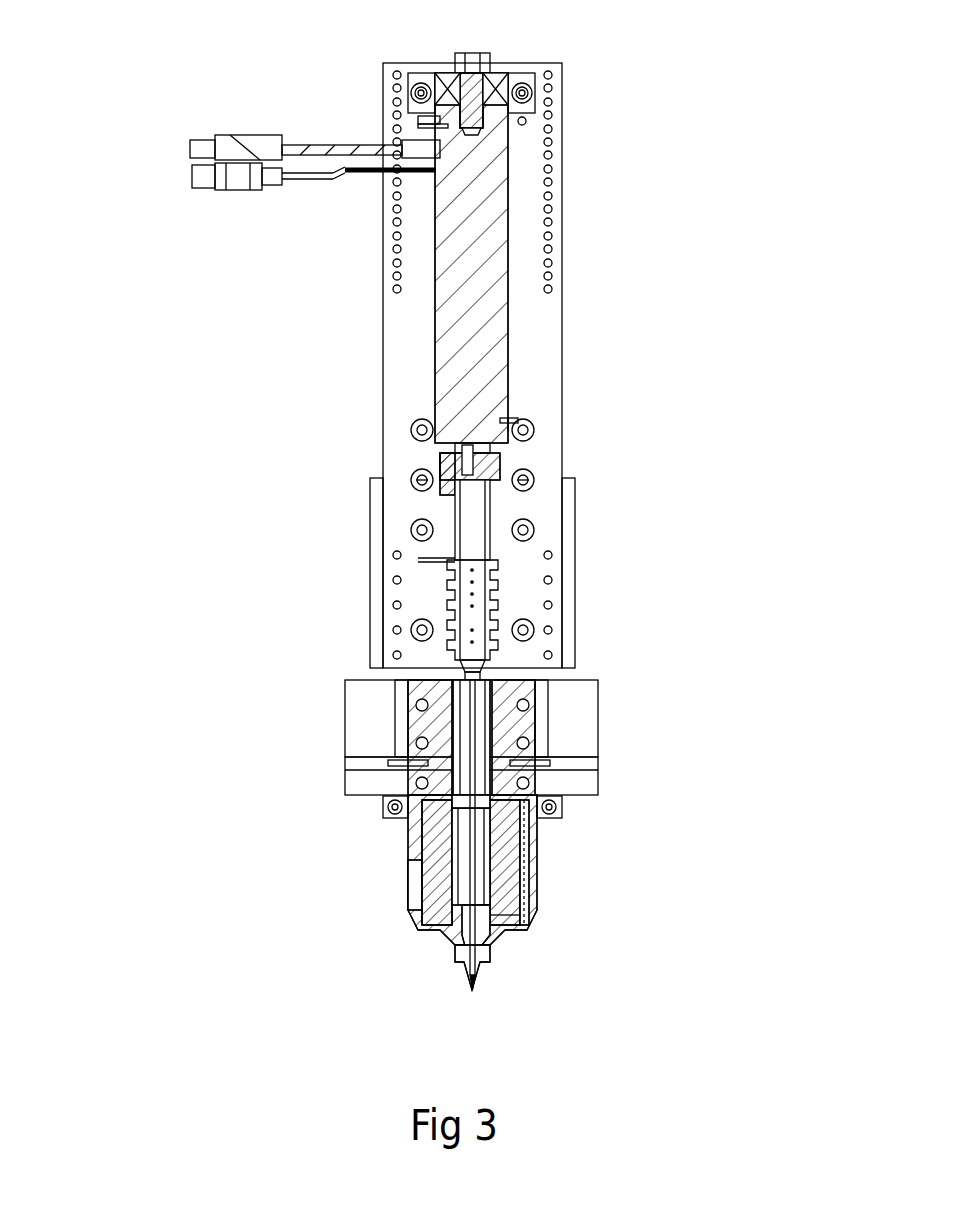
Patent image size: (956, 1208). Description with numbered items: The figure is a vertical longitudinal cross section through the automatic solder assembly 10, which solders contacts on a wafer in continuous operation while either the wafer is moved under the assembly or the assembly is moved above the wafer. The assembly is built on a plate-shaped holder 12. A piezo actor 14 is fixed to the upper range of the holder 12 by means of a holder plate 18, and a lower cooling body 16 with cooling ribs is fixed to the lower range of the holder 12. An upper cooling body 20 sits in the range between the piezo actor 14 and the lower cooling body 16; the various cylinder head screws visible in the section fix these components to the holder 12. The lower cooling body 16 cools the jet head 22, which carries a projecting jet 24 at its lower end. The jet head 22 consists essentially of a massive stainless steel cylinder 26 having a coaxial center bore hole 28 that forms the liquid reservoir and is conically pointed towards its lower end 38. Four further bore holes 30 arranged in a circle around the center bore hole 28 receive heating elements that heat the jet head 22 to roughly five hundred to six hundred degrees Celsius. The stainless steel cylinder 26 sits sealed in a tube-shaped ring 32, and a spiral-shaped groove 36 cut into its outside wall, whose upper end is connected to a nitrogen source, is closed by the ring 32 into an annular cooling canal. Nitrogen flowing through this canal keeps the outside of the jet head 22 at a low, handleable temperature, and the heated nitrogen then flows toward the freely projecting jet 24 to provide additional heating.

The solder assembly 10 is at (226, 465).
The holder 12 is at (528, 222).
The piezo actor 14 is at (474, 322).
The lower cooling body 16 is at (577, 700).
The holder plate 18 is at (497, 90).
The upper cooling body 20 is at (473, 612).
The jet head 22 is at (530, 837).
The jet 24 is at (470, 967).
The stainless steel cylinder 26 is at (437, 855).
The center bore hole 28 is at (483, 833).
The bore holes 30 is at (502, 887).
The ring 32 is at (413, 906).
The groove 36 is at (520, 877).
The lower end 38 is at (480, 917).